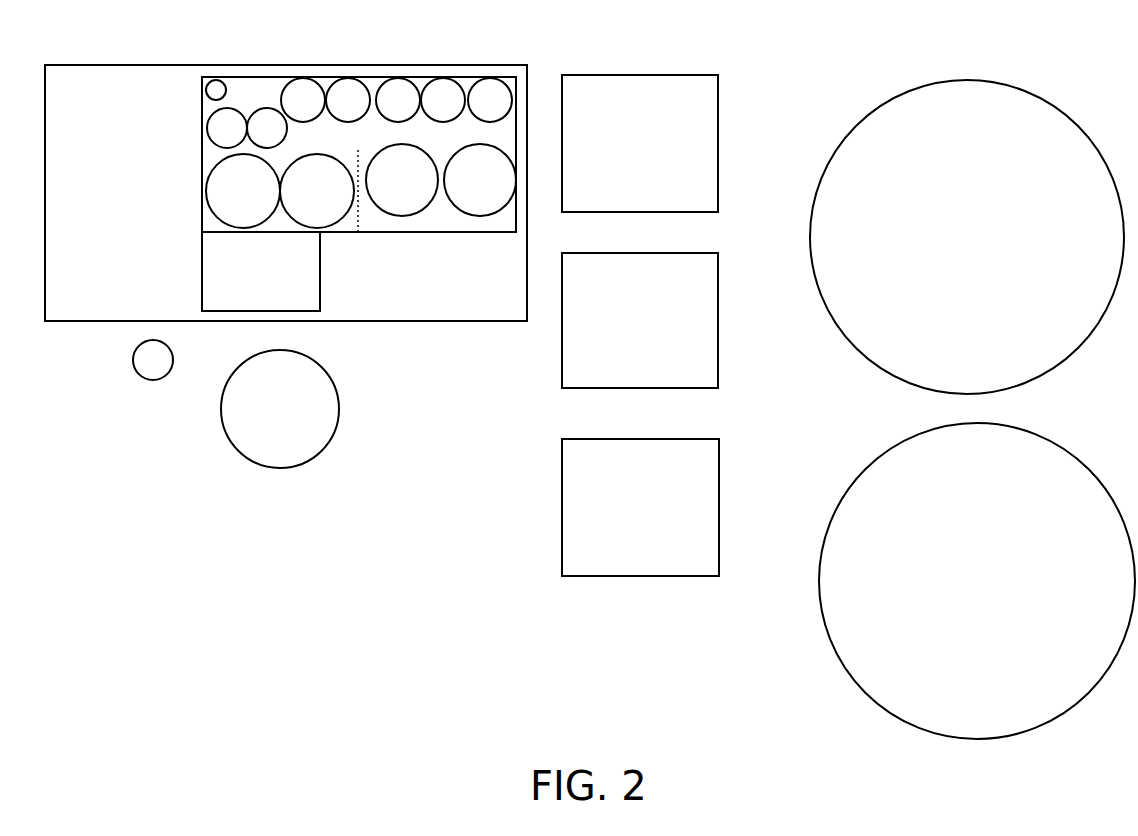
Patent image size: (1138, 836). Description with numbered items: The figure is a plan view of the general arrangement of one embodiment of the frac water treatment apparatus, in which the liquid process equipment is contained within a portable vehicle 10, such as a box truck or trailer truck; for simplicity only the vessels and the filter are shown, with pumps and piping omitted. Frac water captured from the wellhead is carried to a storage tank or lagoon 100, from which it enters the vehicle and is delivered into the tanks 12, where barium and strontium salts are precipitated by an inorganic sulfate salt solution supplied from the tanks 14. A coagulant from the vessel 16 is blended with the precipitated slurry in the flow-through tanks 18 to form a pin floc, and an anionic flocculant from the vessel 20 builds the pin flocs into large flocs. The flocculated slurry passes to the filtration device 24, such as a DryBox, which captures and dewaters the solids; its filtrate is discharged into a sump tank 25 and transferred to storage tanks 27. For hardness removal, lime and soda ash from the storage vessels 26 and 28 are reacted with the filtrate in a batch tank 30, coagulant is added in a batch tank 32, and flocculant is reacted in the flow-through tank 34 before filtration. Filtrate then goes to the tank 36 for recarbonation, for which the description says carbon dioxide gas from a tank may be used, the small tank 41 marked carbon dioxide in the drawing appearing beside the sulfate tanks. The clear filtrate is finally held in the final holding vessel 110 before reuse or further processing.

The portable vehicle 10 is at (482, 330).
The tank 12 is at (247, 84).
The tank 14 is at (325, 68).
The vessel 16 is at (447, 78).
The flow-through tank 18 is at (215, 165).
The vessel 20 is at (501, 79).
The filtration device 24 is at (320, 283).
The sump tank 25 is at (142, 376).
The storage vessel 26 is at (398, 78).
The storage tank 27 is at (718, 143).
The storage vessel 28 is at (480, 216).
The batch tank 30 is at (402, 217).
The batch tank 32 is at (340, 412).
The flow-through tank 34 is at (343, 163).
The tank 36 is at (562, 505).
The carbon dioxide tank 41 is at (206, 90).
The storage tank 100 is at (880, 105).
The final holding vessel 110 is at (827, 630).